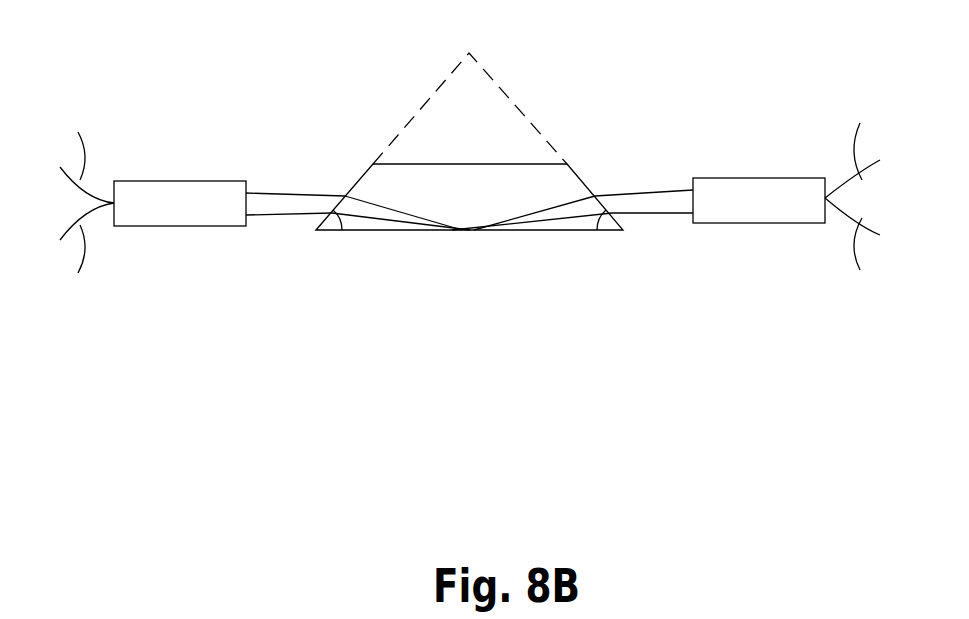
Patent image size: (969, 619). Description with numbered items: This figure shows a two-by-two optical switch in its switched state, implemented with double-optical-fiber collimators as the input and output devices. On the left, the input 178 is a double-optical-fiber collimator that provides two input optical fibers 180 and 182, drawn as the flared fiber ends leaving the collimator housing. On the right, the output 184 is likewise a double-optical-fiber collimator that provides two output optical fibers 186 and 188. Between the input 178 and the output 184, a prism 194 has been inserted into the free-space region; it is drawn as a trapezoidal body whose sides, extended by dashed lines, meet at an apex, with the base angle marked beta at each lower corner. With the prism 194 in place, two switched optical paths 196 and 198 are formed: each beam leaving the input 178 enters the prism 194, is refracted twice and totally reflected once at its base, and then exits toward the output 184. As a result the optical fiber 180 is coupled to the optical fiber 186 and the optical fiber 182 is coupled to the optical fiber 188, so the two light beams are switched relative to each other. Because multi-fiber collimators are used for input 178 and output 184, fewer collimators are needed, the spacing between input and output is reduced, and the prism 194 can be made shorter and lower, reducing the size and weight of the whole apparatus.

The input 178 is at (190, 190).
The input optical fiber 180 is at (85, 150).
The input optical fiber 182 is at (85, 258).
The output 184 is at (745, 187).
The output optical fiber 186 is at (860, 146).
The output optical fiber 188 is at (865, 251).
The prism 194 is at (487, 164).
The switched optical path 196 is at (285, 190).
The switched optical path 198 is at (285, 215).